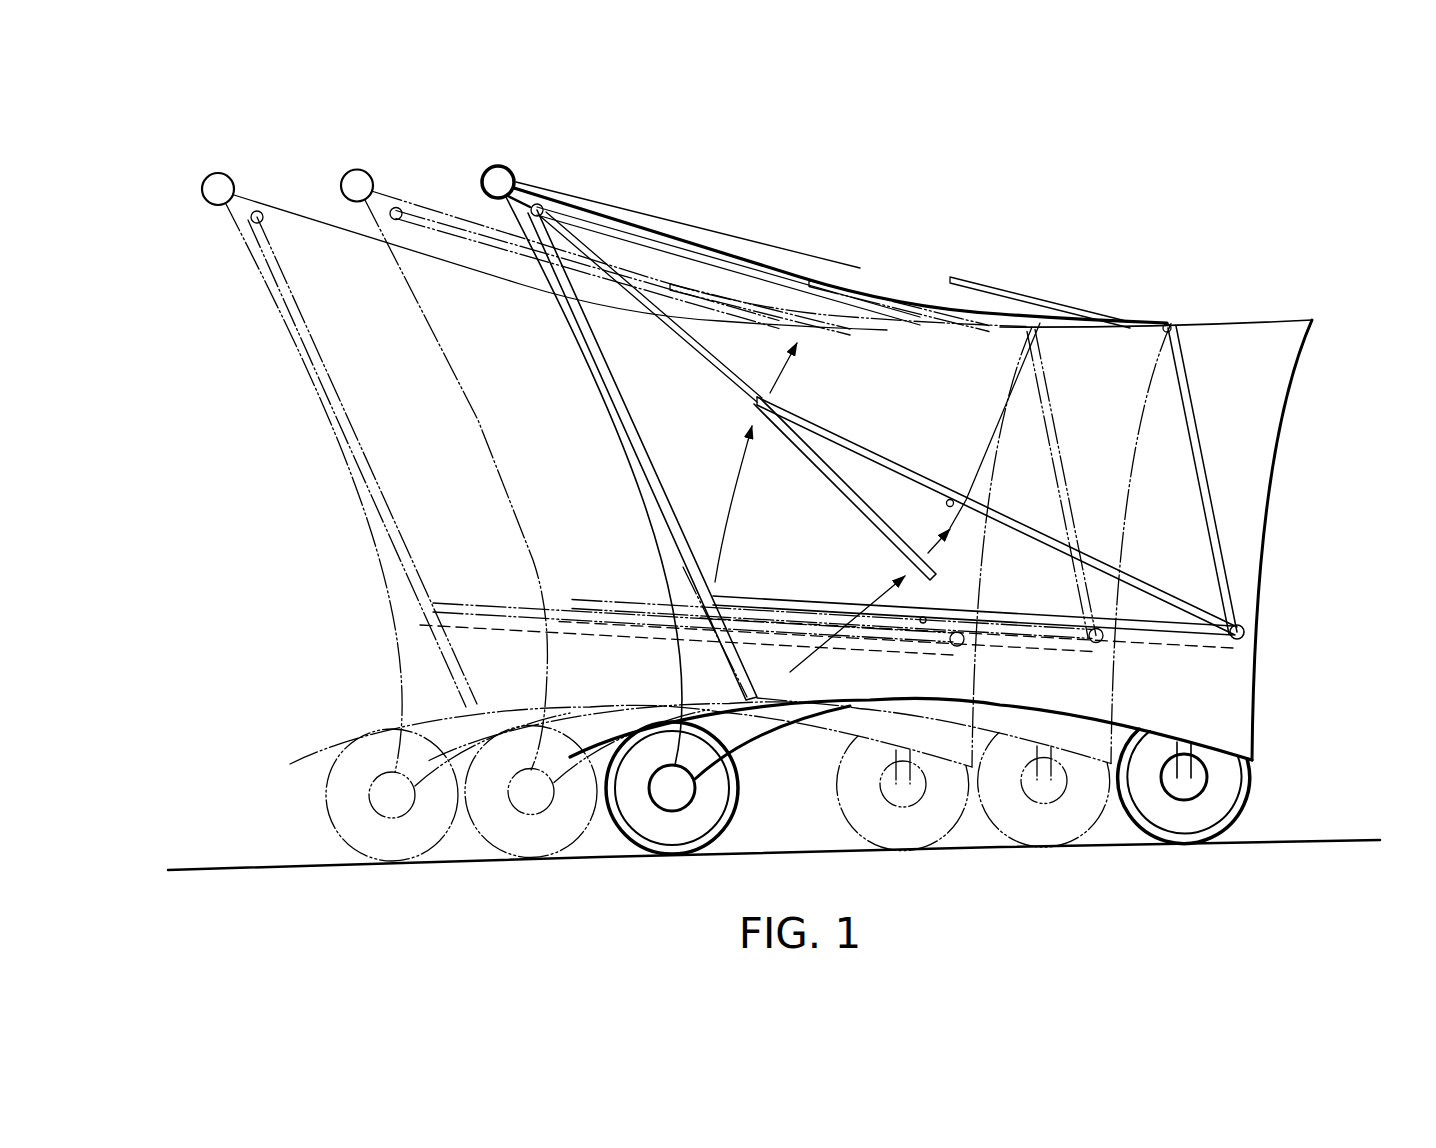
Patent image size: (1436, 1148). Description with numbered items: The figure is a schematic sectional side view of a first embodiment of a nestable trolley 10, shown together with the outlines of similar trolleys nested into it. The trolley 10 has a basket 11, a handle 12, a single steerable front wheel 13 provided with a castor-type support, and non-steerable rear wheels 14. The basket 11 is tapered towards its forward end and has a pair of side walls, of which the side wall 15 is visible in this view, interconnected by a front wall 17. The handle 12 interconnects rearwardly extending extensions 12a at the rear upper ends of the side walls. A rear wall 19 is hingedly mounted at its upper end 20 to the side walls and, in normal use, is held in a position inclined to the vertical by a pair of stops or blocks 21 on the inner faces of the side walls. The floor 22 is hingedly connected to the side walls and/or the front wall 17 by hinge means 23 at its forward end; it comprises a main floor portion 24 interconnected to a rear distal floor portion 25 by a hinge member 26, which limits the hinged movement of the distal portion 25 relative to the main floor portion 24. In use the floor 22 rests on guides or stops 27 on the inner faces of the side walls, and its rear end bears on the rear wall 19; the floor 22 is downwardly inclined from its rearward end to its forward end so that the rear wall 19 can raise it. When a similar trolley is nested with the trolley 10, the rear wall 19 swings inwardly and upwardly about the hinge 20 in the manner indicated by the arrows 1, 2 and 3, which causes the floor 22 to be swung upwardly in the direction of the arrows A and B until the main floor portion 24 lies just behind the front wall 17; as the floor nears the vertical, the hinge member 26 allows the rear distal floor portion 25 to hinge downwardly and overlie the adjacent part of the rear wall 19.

The trolley 10 is at (1311, 262).
The basket 11 is at (1288, 426).
The handle 12 is at (531, 166).
The rearwardly extending extensions 12a is at (522, 203).
The front wheel 13 is at (1247, 787).
The rear wheels 14 is at (493, 831).
The side wall 15 is at (1190, 694).
The front wall 17 is at (1272, 539).
The rear wall 19 is at (618, 437).
The upper end (hinge) 20 is at (556, 198).
The stops or blocks 21 is at (685, 593).
The floor 22 is at (1094, 552).
The hinge means 23 is at (1245, 633).
The main floor portion 24 is at (993, 528).
The rear distal floor portion 25 is at (871, 452).
The hinge member 26 is at (951, 498).
The guides or stops 27 is at (1017, 642).
The arrow 1 is at (790, 670).
The arrow 2 is at (852, 489).
The arrow 3 is at (1119, 336).
The arrow A is at (733, 507).
The arrow B is at (787, 370).